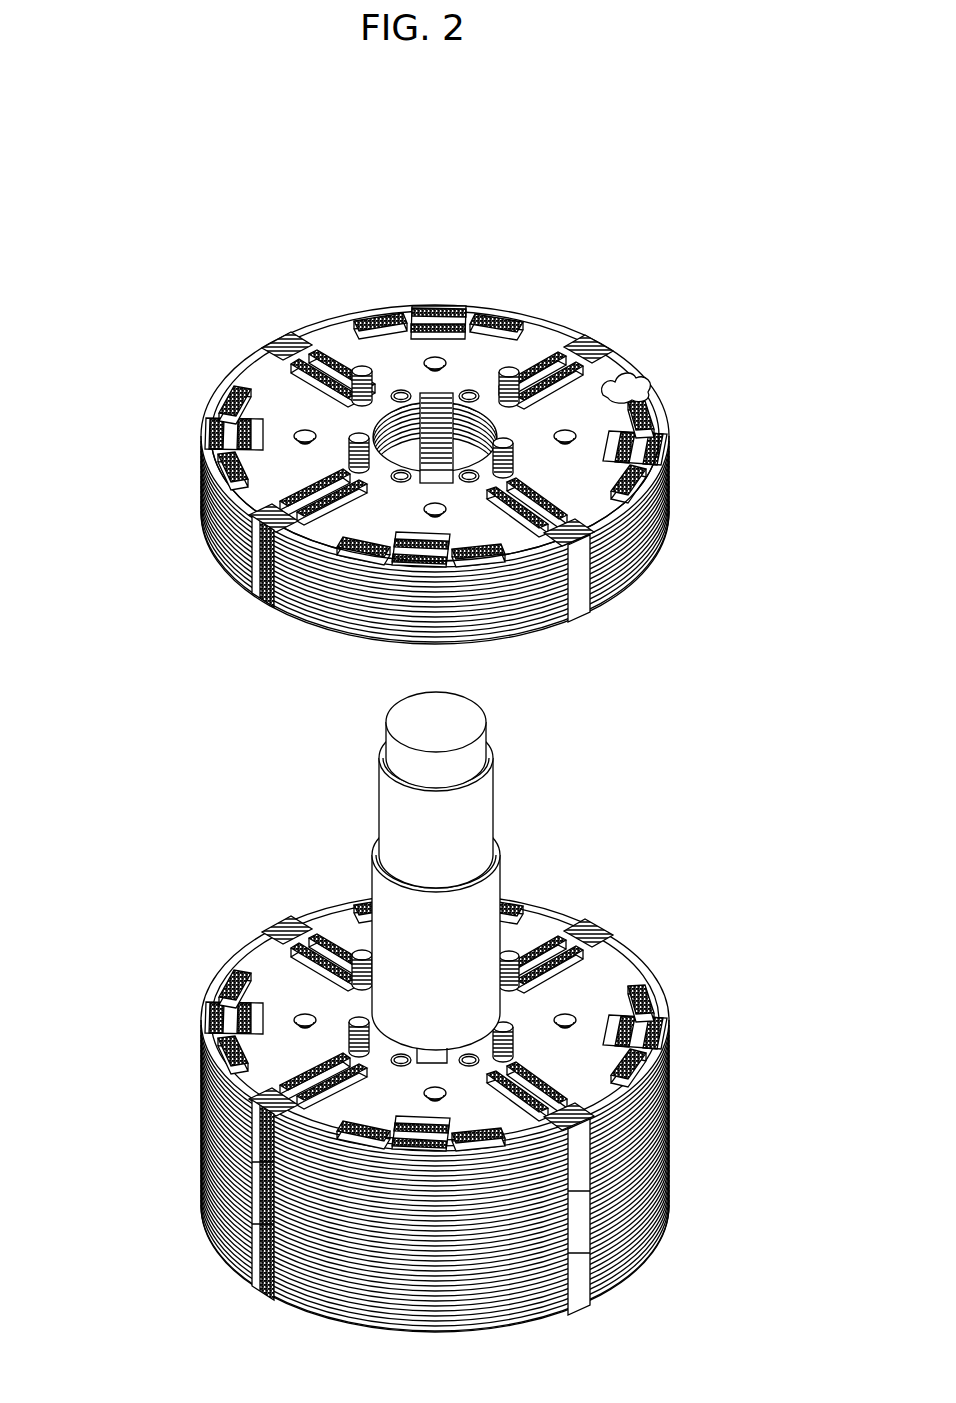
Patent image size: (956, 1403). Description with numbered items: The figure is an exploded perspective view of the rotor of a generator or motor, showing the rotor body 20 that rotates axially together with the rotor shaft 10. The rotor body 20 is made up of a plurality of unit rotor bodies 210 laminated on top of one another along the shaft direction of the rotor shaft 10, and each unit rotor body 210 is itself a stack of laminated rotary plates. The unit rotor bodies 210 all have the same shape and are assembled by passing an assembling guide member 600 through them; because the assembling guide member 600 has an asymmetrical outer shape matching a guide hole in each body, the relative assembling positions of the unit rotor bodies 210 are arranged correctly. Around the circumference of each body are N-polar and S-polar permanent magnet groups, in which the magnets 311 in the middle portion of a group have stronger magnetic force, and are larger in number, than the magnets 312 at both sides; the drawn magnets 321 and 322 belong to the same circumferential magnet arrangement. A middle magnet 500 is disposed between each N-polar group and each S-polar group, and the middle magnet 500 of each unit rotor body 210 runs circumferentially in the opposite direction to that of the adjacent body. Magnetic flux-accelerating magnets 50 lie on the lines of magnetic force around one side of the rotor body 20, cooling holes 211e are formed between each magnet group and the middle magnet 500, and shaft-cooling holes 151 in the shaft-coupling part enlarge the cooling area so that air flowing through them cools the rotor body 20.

The rotor shaft 10 is at (390, 800).
The rotor body 20 is at (100, 1105).
The unit rotor body 210 is at (683, 431).
The cooling hole 211e is at (660, 530).
The magnetic flux-accelerating magnet 50 is at (652, 495).
The shaft-cooling hole 151 is at (503, 482).
The magnet arranged in the middle portion of the group 311 is at (433, 305).
The magnet arranged at both sides of the group 312 is at (380, 305).
The third permanent magnet 321 is at (215, 428).
The fourth permanent magnet 322 is at (228, 393).
The middle magnet 500 is at (287, 343).
The assembling guide member 600 is at (633, 390).